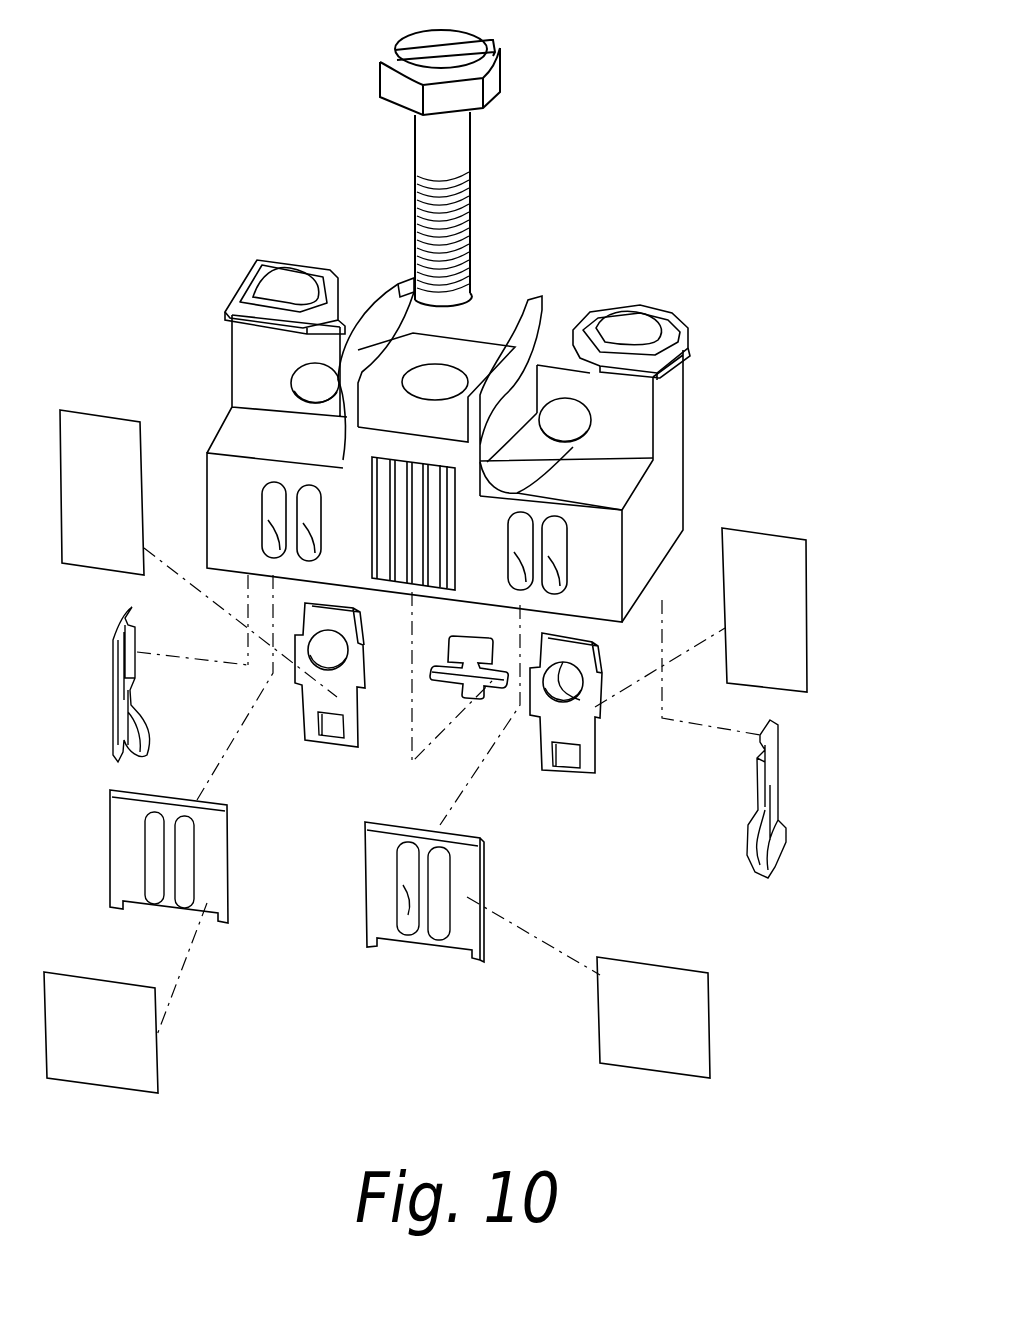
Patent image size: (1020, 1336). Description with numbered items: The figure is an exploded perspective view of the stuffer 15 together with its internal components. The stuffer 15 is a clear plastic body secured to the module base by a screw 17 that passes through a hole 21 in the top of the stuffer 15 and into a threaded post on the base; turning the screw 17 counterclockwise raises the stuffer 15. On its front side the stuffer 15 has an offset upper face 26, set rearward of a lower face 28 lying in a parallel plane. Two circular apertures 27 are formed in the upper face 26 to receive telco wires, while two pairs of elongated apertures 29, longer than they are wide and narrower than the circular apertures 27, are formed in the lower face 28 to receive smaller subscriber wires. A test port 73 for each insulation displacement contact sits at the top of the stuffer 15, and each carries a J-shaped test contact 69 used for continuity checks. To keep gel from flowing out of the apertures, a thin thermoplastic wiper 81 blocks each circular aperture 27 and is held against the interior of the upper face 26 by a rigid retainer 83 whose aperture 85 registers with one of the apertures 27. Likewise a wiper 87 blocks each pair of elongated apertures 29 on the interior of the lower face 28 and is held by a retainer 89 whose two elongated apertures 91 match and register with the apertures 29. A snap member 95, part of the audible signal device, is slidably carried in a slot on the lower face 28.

The stuffer 15 is at (667, 432).
The screw 17 is at (458, 137).
The hole 21 is at (450, 385).
The upper face 26 is at (275, 330).
The circular apertures 27 is at (573, 425).
The lower face 28 is at (228, 473).
The elongated apertures 29 is at (560, 558).
The test contact 69 is at (773, 773).
The test port 73 is at (637, 328).
The wiper 81 is at (780, 608).
The retainer 83 is at (580, 737).
The aperture 85 is at (598, 703).
The wiper 87 is at (650, 1040).
The retainer 89 is at (461, 877).
The elongated apertures 91 is at (410, 900).
The snap member 95 is at (455, 648).